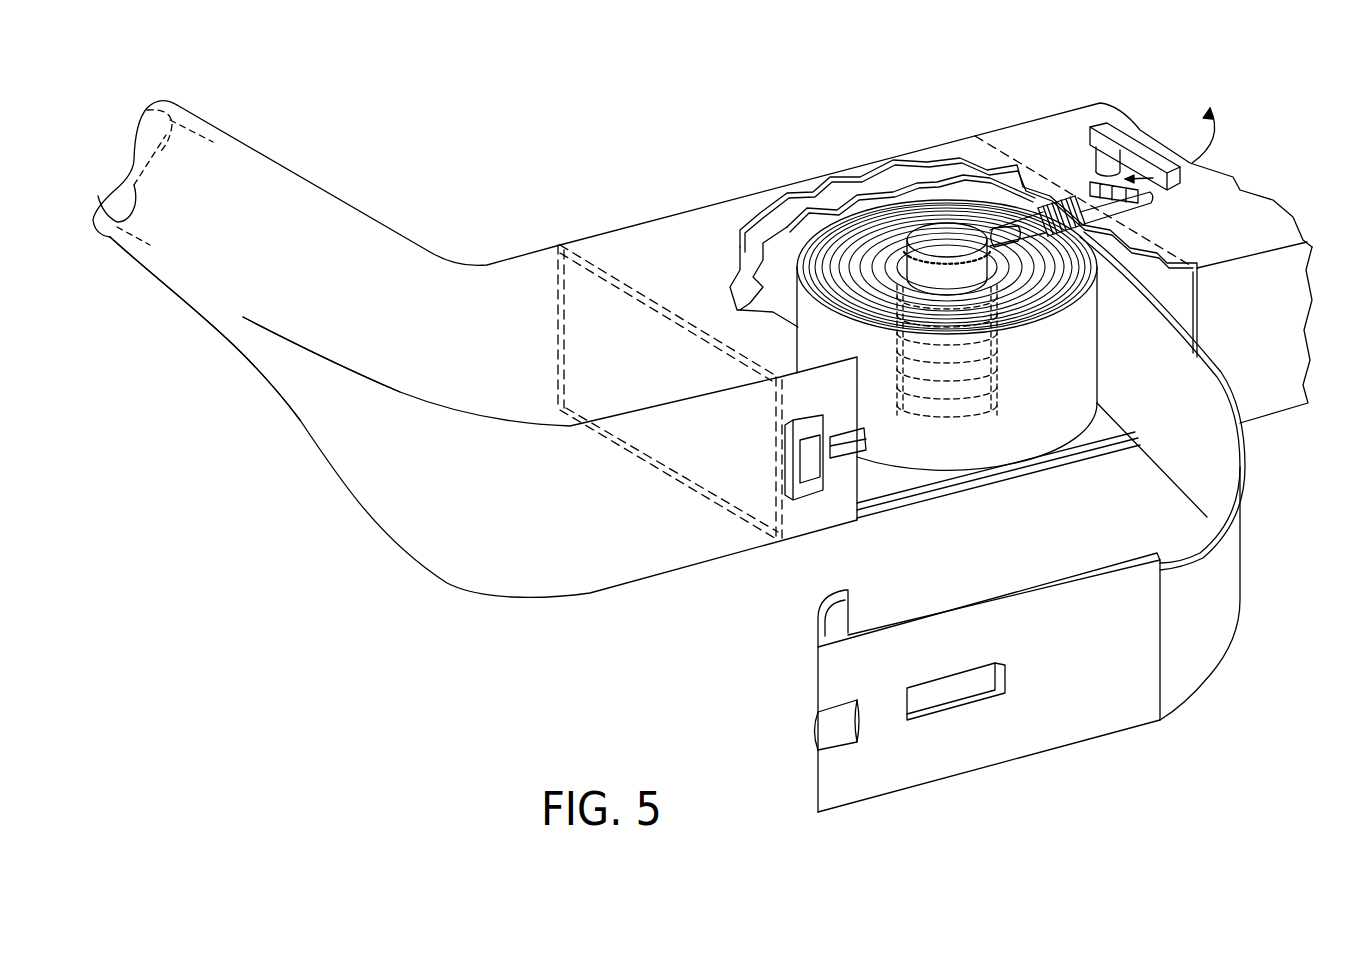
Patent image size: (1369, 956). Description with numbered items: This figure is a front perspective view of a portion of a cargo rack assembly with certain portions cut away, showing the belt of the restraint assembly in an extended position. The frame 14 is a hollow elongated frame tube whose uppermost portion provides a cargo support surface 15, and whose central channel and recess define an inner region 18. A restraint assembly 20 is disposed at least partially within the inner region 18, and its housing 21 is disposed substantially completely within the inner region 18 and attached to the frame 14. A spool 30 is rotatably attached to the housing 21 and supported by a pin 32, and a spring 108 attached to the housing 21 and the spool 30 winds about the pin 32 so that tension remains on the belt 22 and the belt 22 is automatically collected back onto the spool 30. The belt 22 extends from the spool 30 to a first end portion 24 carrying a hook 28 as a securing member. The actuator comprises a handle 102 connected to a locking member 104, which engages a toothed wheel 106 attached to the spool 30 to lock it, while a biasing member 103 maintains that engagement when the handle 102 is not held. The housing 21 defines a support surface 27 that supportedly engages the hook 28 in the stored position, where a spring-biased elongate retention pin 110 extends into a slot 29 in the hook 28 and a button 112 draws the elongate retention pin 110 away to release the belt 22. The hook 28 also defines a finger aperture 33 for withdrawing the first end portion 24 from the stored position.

The frame 14 is at (218, 443).
The cargo support surface 15 is at (477, 297).
The inner region 18 is at (110, 193).
The restraint assembly 20 is at (788, 167).
The housing 21 is at (740, 283).
The belt 22 is at (1185, 483).
The first end portion 24 is at (1252, 647).
The support surface 27 is at (903, 503).
The hook 28 is at (1053, 737).
The slot 29 is at (818, 730).
The spool 30 is at (903, 263).
The pin 32 is at (930, 233).
The finger aperture 33 is at (1002, 670).
The handle 102 is at (1152, 137).
The biasing member 103 is at (1050, 205).
The locking member 104 is at (1023, 223).
The toothed wheel 106 is at (903, 247).
The spring 108 is at (1003, 380).
The elongate retention pin 110 is at (840, 455).
The button 112 is at (810, 463).